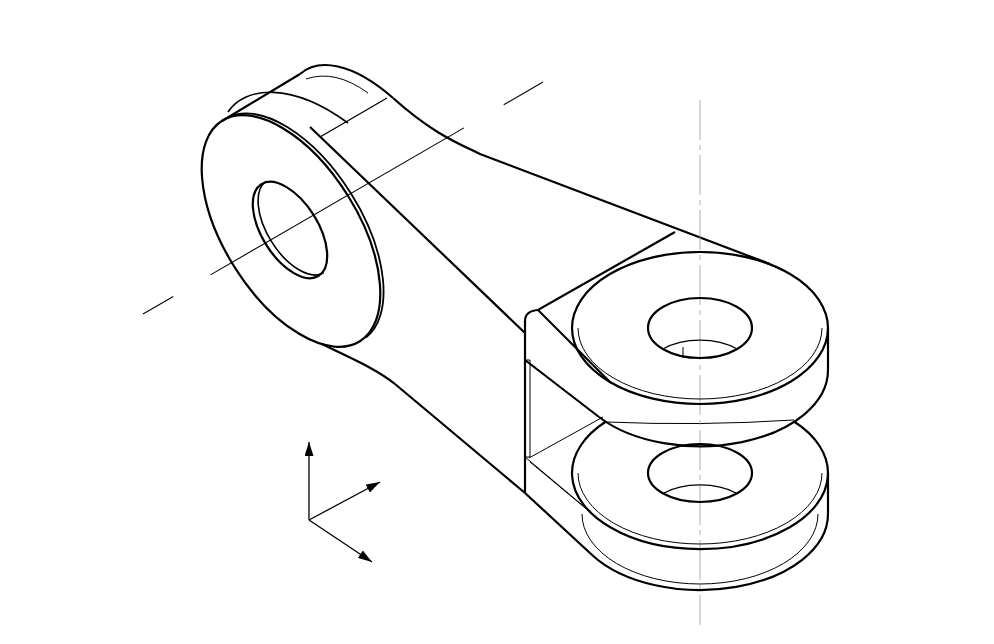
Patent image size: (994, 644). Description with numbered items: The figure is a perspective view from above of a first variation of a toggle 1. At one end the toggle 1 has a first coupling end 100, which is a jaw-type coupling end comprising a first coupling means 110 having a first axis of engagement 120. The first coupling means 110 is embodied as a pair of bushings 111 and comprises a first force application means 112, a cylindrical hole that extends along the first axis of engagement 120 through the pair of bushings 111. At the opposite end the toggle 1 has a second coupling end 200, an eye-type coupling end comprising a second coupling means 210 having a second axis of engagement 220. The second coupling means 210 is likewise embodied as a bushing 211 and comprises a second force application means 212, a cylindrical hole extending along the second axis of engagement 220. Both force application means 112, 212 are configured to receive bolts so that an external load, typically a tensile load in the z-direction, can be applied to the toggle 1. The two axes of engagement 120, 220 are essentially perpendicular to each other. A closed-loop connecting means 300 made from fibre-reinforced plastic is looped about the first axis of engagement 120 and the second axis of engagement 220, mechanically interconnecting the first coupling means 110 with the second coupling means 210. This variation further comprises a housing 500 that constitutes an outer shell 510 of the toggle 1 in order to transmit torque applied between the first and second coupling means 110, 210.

The toggle 1 is at (118, 39).
The first coupling end 100 is at (753, 237).
The first coupling means 110 is at (807, 298).
The bushing 111 is at (737, 436).
The first force application means 112 is at (723, 317).
The first axis of engagement 120 is at (702, 130).
The second coupling end 200 is at (258, 337).
The second coupling means 210 is at (240, 232).
The bushing 211 is at (212, 194).
The second force application means 212 is at (290, 209).
The second axis of engagement 220 is at (205, 282).
The closed-loop connecting means 300 is at (300, 74).
The housing 500 is at (445, 161).
The outer shell 510 is at (528, 212).